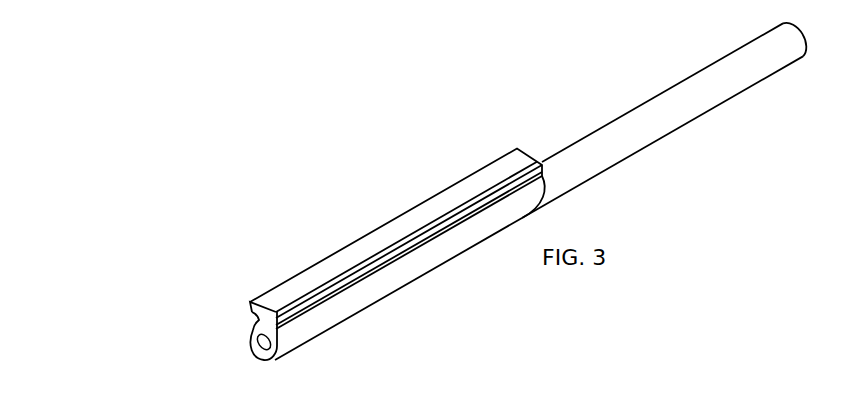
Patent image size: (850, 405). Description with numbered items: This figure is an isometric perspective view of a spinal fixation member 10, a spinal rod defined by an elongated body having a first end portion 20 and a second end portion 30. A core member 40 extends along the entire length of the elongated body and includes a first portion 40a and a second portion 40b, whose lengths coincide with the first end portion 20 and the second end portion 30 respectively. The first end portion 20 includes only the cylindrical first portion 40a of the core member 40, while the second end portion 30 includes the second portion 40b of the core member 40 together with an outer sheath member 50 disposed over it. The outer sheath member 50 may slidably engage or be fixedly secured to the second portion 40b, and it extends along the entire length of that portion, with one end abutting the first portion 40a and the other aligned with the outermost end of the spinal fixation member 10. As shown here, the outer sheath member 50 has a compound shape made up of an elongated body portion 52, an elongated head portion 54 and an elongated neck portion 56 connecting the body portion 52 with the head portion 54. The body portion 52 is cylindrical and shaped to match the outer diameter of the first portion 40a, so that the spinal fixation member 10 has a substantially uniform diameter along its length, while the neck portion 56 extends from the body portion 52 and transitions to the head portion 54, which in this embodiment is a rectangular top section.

The spinal fixation member 10 is at (446, 127).
The first end portion 20 is at (698, 68).
The second end portion 30 is at (380, 306).
The core member 40 is at (602, 124).
The first portion of the core member 40a is at (661, 139).
The second portion of the core member 40b is at (273, 354).
The outer sheath member 50 is at (353, 243).
The body portion 52 is at (246, 342).
The head portion 54 is at (247, 298).
The neck portion 56 is at (250, 320).